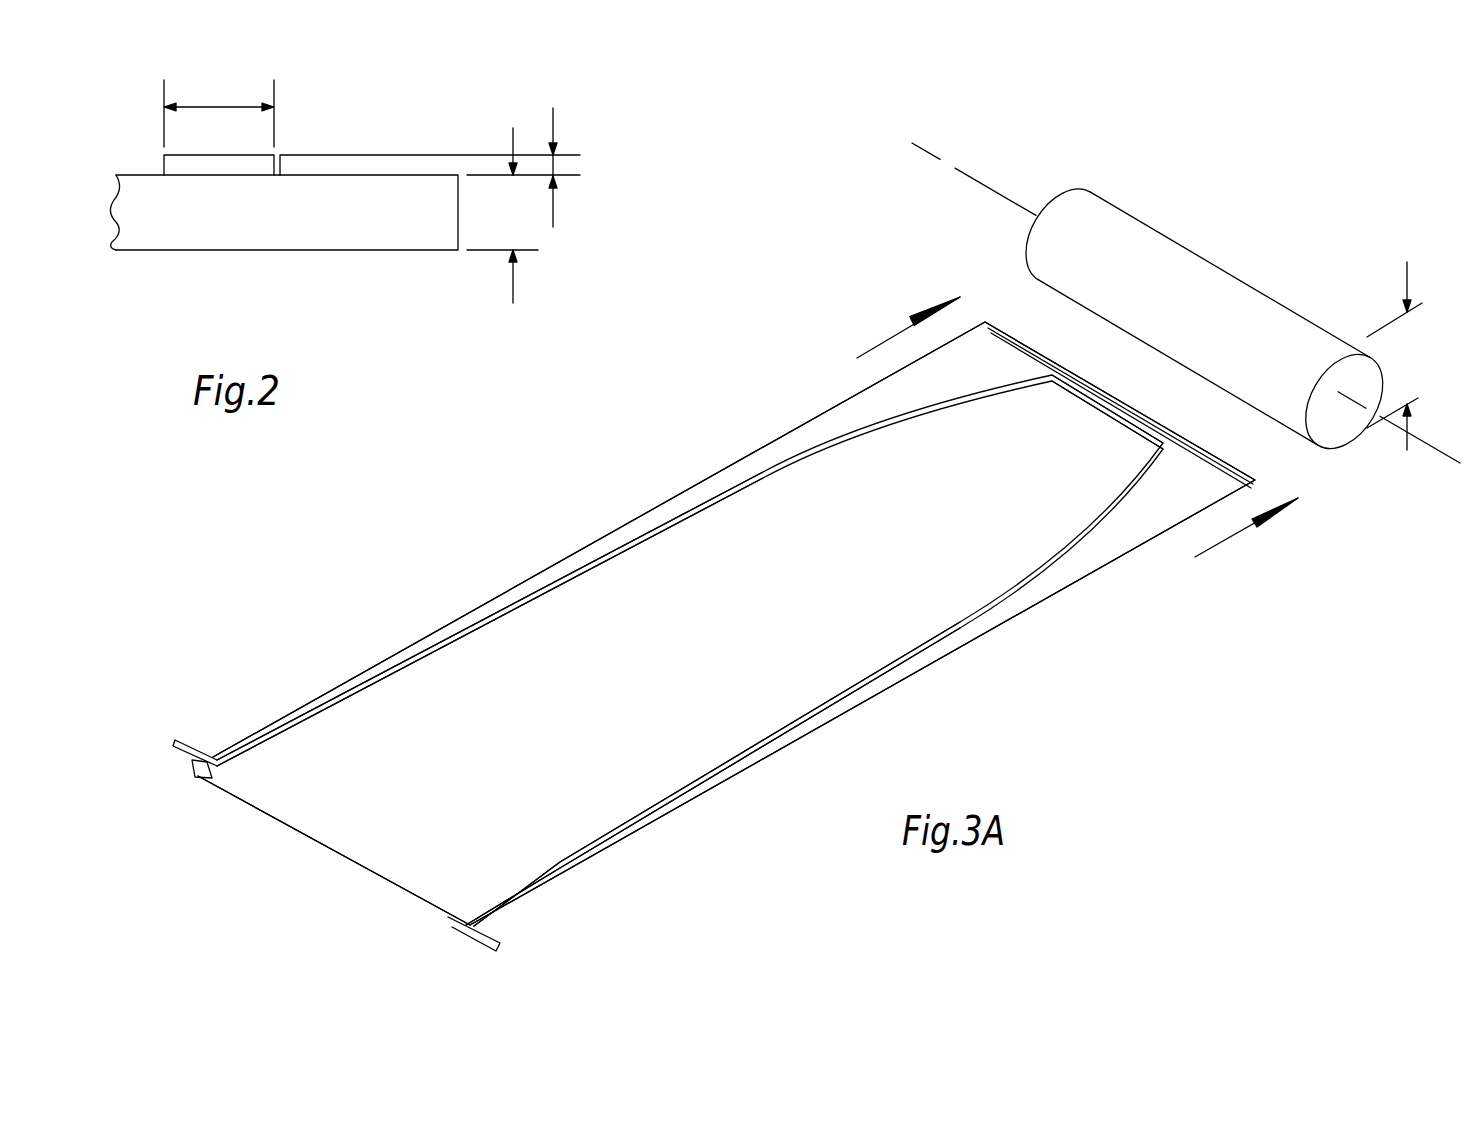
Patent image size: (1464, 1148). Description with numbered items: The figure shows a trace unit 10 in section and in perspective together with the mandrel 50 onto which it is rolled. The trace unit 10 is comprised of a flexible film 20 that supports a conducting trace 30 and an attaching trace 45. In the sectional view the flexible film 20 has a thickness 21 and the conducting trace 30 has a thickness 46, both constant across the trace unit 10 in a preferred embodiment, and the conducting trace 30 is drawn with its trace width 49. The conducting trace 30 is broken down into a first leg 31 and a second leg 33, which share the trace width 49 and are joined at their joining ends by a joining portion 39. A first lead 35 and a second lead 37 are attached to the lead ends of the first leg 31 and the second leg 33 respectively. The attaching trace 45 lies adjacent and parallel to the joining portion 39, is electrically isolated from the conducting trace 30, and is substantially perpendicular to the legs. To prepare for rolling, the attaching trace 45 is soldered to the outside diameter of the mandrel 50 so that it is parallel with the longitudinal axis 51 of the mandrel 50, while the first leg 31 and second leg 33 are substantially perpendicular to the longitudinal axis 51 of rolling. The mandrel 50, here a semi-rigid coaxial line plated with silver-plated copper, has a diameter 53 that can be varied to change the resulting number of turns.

In FIG. 3A, the trace unit 10 is at (583, 548).
In FIG. 2, the flexible film 20 is at (232, 240).
In FIG. 3A, the flexible film 20 is at (320, 848).
In FIG. 2, the thickness 21 is at (514, 293).
In FIG. 2, the conducting trace 30 is at (210, 165).
In FIG. 3A, the conducting trace 30 is at (762, 473).
In FIG. 3A, the first leg 31 is at (993, 603).
In FIG. 3A, the second leg 33 is at (670, 520).
In FIG. 3A, the first lead 35 is at (483, 930).
In FIG. 3A, the second lead 37 is at (205, 773).
In FIG. 3A, the joining portion 39 is at (1107, 408).
In FIG. 3A, the attaching trace 45 is at (1197, 444).
In FIG. 2, the thickness 46 is at (555, 122).
In FIG. 2, the trace width 49 is at (215, 106).
In FIG. 3A, the mandrel 50 is at (1247, 282).
In FIG. 3A, the longitudinal axis 51 is at (962, 172).
In FIG. 3A, the diameter 53 is at (1407, 272).